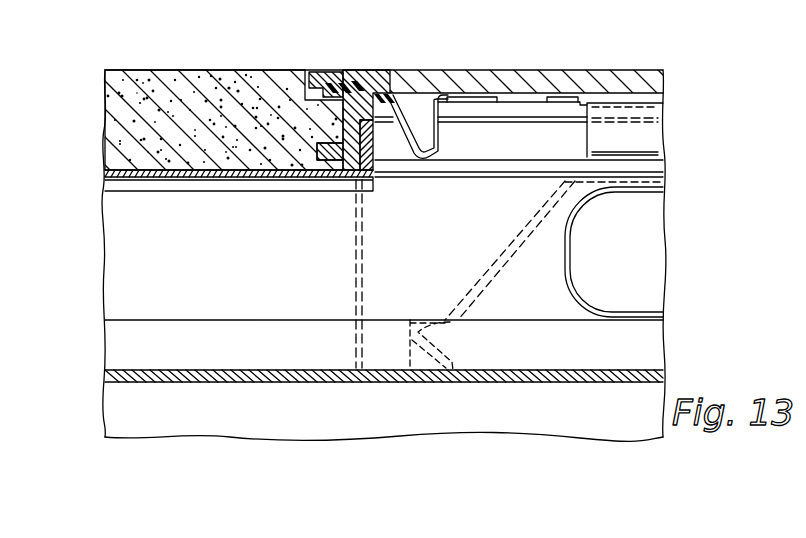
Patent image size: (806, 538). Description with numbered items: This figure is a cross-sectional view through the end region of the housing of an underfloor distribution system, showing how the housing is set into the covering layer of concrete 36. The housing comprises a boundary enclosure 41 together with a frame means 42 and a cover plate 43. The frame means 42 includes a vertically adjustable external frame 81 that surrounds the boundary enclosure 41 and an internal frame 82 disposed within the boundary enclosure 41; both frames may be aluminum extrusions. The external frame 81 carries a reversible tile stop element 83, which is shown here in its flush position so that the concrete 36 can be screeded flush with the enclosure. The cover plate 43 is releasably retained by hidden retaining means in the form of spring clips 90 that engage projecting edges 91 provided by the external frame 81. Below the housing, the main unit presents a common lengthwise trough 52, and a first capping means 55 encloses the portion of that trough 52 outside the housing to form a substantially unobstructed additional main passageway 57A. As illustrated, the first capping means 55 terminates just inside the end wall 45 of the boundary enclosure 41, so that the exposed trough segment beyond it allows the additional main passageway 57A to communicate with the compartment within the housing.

The concrete 36 is at (196, 82).
The external frame 81 is at (317, 68).
The frame means 42 is at (342, 57).
The tile stop element 83 is at (352, 70).
The projecting edges 91 is at (417, 110).
The cover plate 43 is at (637, 82).
The spring clips 90 is at (597, 137).
The internal frame 82 is at (376, 143).
The additional main passageway 57A is at (340, 237).
The end wall 45 is at (353, 261).
The boundary enclosure 41 is at (346, 292).
The first capping means 55 is at (140, 186).
The common lengthwise trough 52 is at (623, 365).